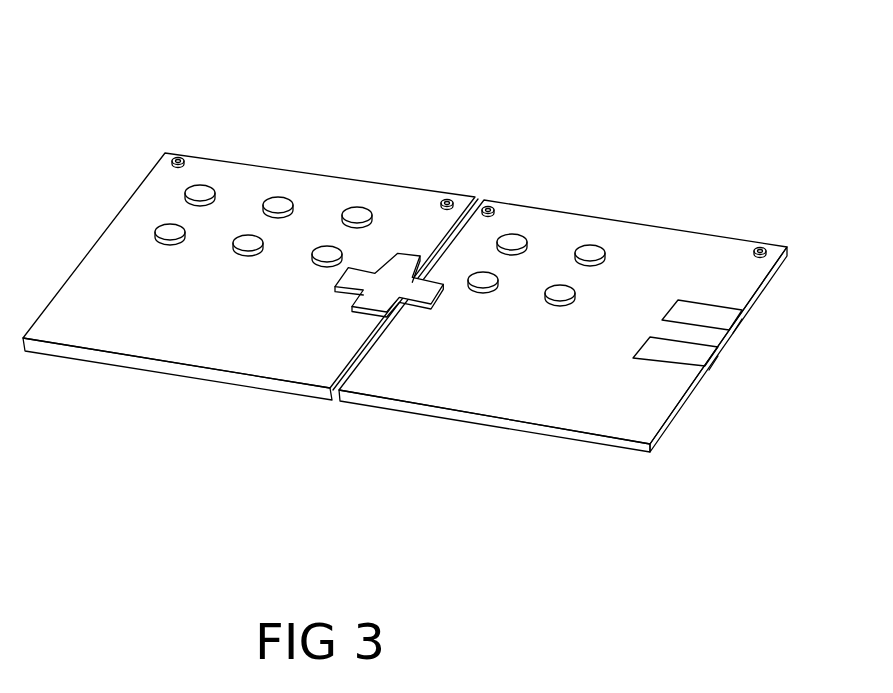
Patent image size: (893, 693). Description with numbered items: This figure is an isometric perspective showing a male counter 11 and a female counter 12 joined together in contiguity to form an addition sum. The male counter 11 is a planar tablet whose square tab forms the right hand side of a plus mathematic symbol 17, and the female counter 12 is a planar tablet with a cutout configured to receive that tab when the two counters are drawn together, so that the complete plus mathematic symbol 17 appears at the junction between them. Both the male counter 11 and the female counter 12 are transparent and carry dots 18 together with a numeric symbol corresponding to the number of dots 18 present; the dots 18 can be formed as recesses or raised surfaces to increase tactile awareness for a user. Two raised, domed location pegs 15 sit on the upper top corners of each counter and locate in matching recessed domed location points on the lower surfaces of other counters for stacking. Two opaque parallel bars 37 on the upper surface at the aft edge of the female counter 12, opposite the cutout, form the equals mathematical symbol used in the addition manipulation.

The male counter 11 is at (291, 170).
The female counter 12 is at (598, 216).
The domed location pegs 15 is at (184, 154).
The plus mathematic symbol 17 is at (369, 261).
The dots 18 is at (367, 201).
The opaque parallel bars 37 is at (713, 358).